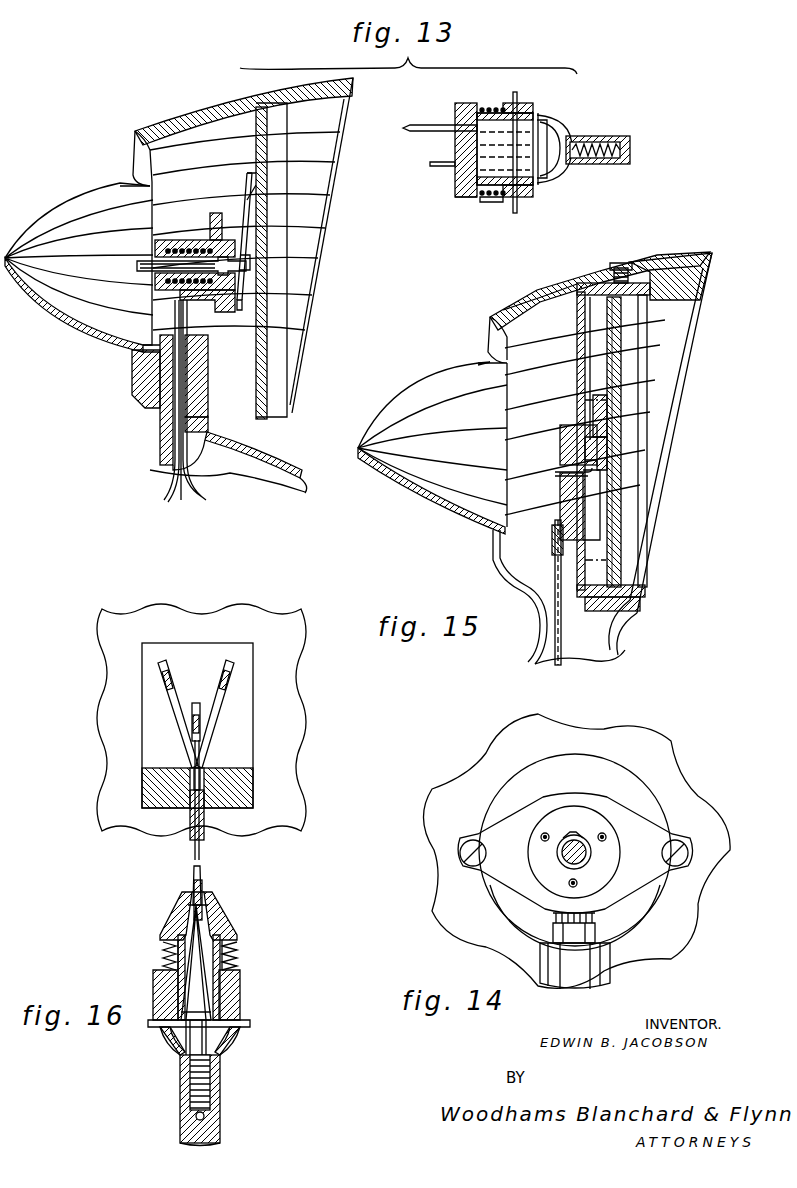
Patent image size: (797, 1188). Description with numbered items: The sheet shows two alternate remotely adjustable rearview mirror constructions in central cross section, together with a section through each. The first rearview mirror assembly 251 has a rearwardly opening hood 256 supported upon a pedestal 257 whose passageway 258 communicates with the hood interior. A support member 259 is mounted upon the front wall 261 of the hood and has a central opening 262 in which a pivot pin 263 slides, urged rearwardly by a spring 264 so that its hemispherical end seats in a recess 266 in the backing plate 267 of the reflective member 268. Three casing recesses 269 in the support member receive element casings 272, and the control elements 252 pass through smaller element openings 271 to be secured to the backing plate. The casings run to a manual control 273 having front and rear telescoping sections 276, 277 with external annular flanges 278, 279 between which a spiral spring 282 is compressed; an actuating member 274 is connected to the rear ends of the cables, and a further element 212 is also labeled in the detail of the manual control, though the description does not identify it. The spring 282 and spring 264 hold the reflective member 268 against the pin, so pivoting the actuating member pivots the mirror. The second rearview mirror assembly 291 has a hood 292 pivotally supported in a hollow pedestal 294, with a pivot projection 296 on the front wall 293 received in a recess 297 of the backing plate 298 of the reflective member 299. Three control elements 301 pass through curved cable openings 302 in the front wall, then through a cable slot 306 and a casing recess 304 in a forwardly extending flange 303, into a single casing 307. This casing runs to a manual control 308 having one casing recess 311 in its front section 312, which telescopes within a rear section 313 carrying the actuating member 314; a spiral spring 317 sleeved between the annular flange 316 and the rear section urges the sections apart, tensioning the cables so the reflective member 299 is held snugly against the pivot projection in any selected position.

In FIG. 13, the rearview mirror assembly 251 is at (158, 95).
In FIG. 13, the hood 256 is at (218, 93).
In FIG. 14, the hood 256 is at (682, 756).
In FIG. 13, the front wall 261 is at (150, 158).
In FIG. 14, the front wall 261 is at (575, 841).
In FIG. 13, the support member 259 is at (205, 240).
In FIG. 14, the support member 259 is at (638, 826).
In FIG. 13, the pin opening 262 is at (180, 250).
In FIG. 14, the pin opening 262 is at (581, 838).
In FIG. 13, the pivot pin 263 is at (140, 266).
In FIG. 14, the pivot pin 263 is at (566, 832).
In FIG. 13, the spring 264 is at (170, 290).
In FIG. 13, the casing recesses 269 is at (185, 313).
In FIG. 13, the pivot recess 266 is at (250, 262).
In FIG. 13, the element openings 271 is at (258, 300).
In FIG. 14, the element openings 271 is at (583, 880).
In FIG. 13, the backing plate 267 is at (262, 320).
In FIG. 13, the reflective member 268 is at (278, 360).
In FIG. 13, the passageway 258 is at (160, 385).
In FIG. 13, the pedestal 257 is at (300, 492).
In FIG. 14, the pedestal 257 is at (604, 975).
In FIG. 13, the element casings 272 is at (165, 503).
In FIG. 13, the control elements 252 is at (182, 502).
In FIG. 14, the control elements 252 is at (570, 884).
In FIG. 13, the annular flange 278 is at (462, 106).
In FIG. 13, the annular flange 279 is at (511, 103).
In FIG. 13, the rear section 277 is at (545, 125).
In FIG. 13, the actuating member 274 is at (605, 137).
In FIG. 13, the contact pin 212 is at (418, 135).
In FIG. 14, the contact pin 212 is at (595, 922).
In FIG. 13, the front section 276 is at (462, 197).
In FIG. 13, the spiral spring 282 is at (482, 200).
In FIG. 13, the manual control 273 is at (572, 185).
In FIG. 15, the hood 292 is at (685, 256).
In FIG. 15, the front wall 293 is at (577, 351).
In FIG. 16, the front wall 293 is at (288, 752).
In FIG. 15, the backing plate 298 is at (617, 368).
In FIG. 15, the pivot projection 296 is at (600, 445).
In FIG. 15, the pivot recess 297 is at (597, 453).
In FIG. 15, the reflective member 299 is at (630, 508).
In FIG. 15, the cable openings 302 is at (562, 462).
In FIG. 16, the cable openings 302 is at (228, 665).
In FIG. 15, the control elements 301 is at (562, 473).
In FIG. 16, the control elements 301 is at (192, 745).
In FIG. 15, the cable slot 306 is at (560, 518).
In FIG. 16, the cable slot 306 is at (205, 772).
In FIG. 15, the casing recess 304 is at (555, 535).
In FIG. 16, the casing recess 304 is at (190, 810).
In FIG. 15, the rearview mirror assembly 291 is at (485, 547).
In FIG. 15, the pedestal 294 is at (528, 648).
In FIG. 15, the casing 307 is at (564, 676).
In FIG. 16, the casing 307 is at (208, 835).
In FIG. 16, the flange 303 is at (250, 800).
In FIG. 16, the casing recess 311 is at (205, 892).
In FIG. 16, the front section 312 is at (240, 918).
In FIG. 16, the annular flange 316 is at (240, 940).
In FIG. 16, the spiral spring 317 is at (166, 944).
In FIG. 16, the manual control 308 is at (250, 976).
In FIG. 16, the rear section 313 is at (215, 1022).
In FIG. 16, the actuating member 314 is at (222, 1085).